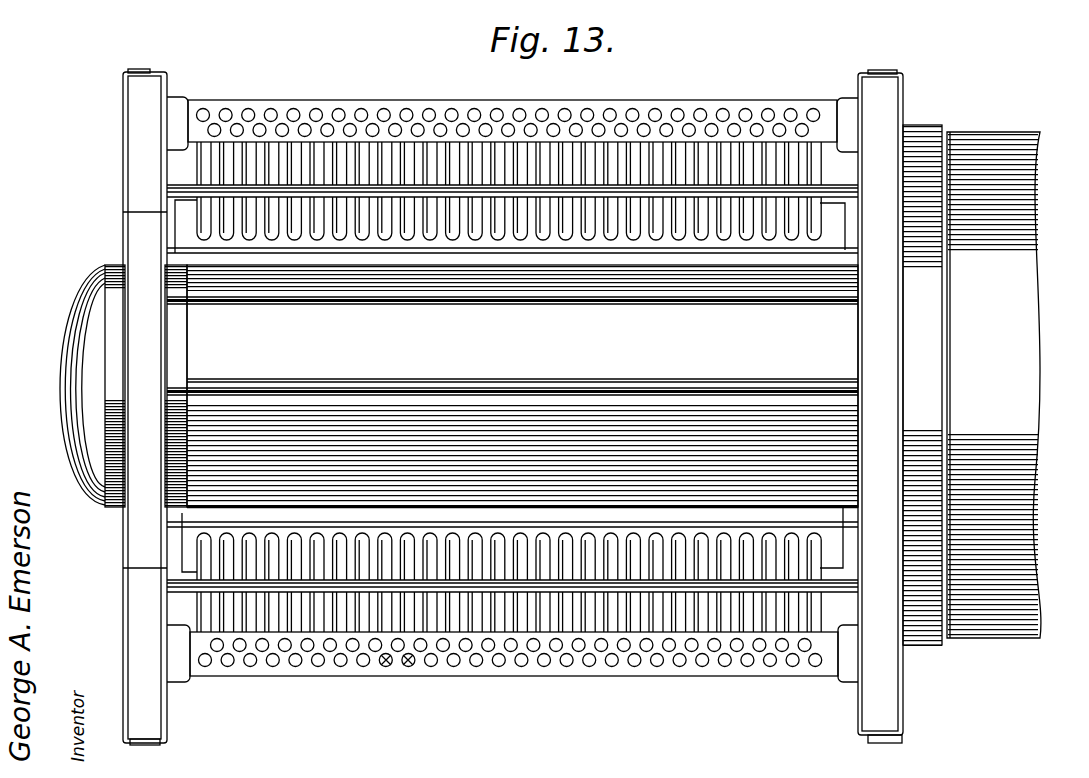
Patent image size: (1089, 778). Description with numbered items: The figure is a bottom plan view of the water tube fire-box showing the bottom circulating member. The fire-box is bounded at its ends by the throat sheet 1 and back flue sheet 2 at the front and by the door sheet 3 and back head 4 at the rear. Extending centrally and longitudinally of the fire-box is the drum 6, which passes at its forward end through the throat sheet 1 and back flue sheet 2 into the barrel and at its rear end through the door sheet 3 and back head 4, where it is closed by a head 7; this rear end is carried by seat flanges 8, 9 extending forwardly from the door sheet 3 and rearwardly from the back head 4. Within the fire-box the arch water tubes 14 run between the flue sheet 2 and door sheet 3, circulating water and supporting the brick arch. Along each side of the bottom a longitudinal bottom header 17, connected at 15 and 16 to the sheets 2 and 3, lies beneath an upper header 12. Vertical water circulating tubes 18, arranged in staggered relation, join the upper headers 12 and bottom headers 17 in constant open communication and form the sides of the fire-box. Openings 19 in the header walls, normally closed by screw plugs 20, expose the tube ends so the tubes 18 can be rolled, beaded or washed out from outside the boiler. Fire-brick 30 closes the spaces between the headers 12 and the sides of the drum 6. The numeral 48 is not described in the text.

The throat sheet 1 is at (906, 100).
The back flue sheet 2 is at (857, 338).
The door sheet 3 is at (160, 227).
The back head 4 is at (126, 174).
The drum 6 is at (522, 386).
The head 7 is at (78, 372).
The seat flange 8 is at (177, 433).
The seat flange 9 is at (118, 400).
The upper header 12 is at (638, 242).
The arch water tube 14 is at (282, 382).
The connection 15 is at (848, 98).
The connection 16 is at (179, 100).
The bottom header 17 is at (388, 102).
The vertical water circulating tube 18 is at (487, 223).
The opening 19 is at (452, 110).
The screw plug 20 is at (407, 668).
The fire-brick 30 is at (728, 258).
The outer cylinder 48 is at (993, 140).